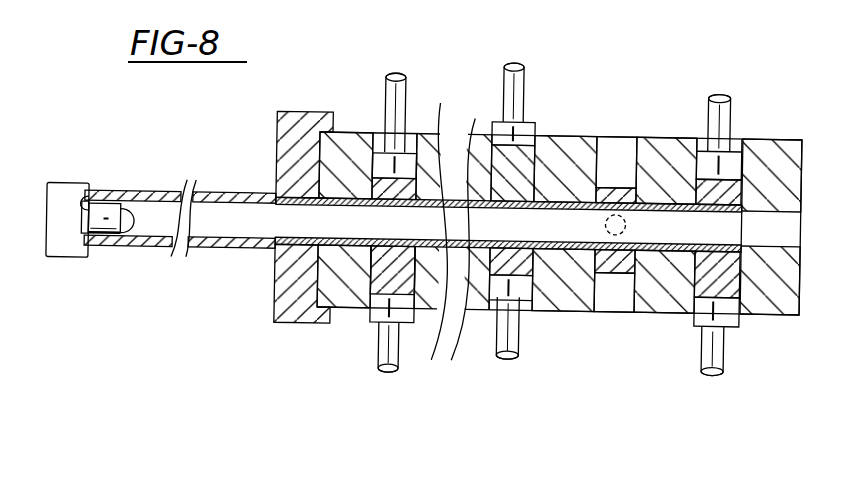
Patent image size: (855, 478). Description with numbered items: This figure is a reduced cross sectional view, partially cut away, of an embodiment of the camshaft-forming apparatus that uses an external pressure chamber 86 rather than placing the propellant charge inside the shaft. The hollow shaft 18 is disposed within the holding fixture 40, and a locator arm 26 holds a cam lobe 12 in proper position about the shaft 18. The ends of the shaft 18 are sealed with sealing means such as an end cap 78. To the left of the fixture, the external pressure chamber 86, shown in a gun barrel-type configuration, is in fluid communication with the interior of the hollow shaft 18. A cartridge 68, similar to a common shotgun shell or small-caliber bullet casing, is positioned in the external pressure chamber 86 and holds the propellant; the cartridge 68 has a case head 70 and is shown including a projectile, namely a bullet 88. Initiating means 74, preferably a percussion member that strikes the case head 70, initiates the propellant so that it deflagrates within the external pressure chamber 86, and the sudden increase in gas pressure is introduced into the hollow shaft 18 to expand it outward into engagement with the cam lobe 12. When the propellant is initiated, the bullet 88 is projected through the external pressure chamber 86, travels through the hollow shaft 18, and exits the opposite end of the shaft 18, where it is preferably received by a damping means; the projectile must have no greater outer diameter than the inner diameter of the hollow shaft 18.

The cam lobe 12 is at (410, 176).
The shaft 18 is at (566, 172).
The locator arm 26 is at (405, 84).
The fixture 40 is at (672, 140).
The cartridge 68 is at (105, 214).
The case head 70 is at (84, 203).
The initiating means 74 is at (60, 187).
The end cap 78 is at (308, 113).
The external pressure chamber 86 is at (230, 197).
The bullet 88 is at (128, 218).